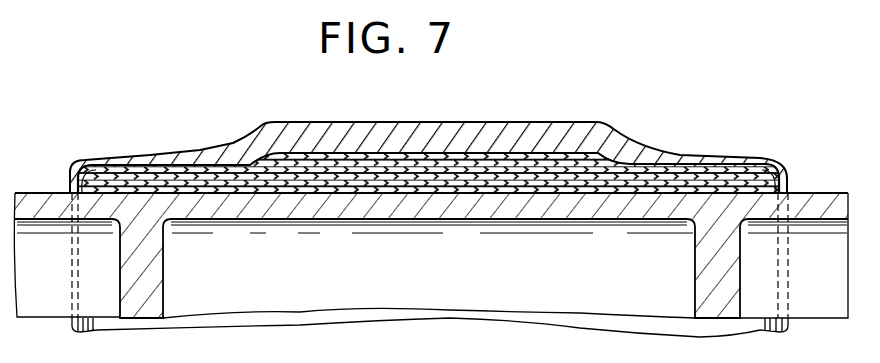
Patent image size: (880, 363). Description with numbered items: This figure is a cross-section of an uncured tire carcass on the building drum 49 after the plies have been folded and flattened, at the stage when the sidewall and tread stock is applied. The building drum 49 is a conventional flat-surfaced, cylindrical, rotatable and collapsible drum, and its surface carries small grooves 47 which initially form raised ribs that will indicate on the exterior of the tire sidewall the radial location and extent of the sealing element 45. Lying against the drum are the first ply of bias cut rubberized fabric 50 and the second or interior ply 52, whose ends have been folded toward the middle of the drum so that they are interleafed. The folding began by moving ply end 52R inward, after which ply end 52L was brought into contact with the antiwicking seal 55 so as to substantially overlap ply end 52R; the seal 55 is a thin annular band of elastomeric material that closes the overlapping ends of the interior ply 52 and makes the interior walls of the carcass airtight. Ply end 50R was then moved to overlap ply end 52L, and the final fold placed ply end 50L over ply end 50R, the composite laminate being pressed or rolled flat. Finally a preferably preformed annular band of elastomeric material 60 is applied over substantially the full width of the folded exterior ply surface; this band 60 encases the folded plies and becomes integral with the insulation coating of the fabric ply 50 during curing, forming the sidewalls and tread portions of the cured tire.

The sealing element 45 is at (632, 196).
The small grooves 47 is at (640, 193).
The building drum 49 is at (444, 196).
The first ply of bias cut rubberized fabric 50 is at (282, 188).
The right end of first fabric ply 50R is at (330, 176).
The left end of first fabric ply 50L is at (445, 158).
The second ply of bias cut rubberized fabric 52 is at (229, 188).
The right end of interior fabric ply 52R is at (336, 185).
The left end of interior fabric ply 52L is at (527, 165).
The antiwicking seal 55 is at (331, 188).
The annular band of elastomeric material 60 is at (483, 123).